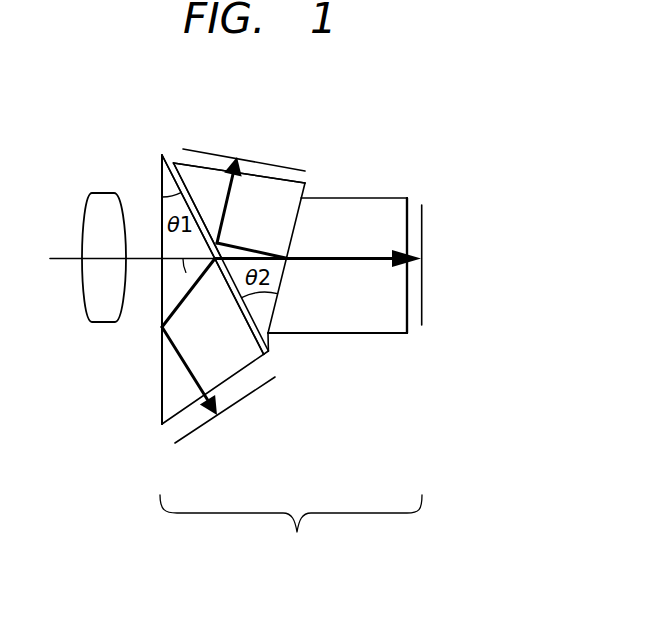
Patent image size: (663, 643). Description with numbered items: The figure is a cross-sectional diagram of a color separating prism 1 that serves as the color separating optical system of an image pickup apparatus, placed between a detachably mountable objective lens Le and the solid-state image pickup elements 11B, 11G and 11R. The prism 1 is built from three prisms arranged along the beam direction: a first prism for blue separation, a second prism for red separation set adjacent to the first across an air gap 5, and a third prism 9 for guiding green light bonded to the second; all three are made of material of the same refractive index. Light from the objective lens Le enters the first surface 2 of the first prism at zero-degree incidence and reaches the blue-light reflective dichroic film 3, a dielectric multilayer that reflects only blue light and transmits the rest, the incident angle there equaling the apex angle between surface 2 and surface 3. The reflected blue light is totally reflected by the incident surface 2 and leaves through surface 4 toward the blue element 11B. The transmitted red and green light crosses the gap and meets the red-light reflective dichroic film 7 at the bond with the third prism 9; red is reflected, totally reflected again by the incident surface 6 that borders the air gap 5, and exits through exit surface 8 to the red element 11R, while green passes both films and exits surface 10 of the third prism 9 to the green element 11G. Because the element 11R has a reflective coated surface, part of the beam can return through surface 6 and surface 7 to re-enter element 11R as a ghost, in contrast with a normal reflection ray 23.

The color separating prism 1 is at (291, 528).
The surface 2 is at (160, 367).
The blue-light reflective dichroic film 3 is at (245, 312).
The surface 4 is at (178, 418).
The air gap 5 is at (268, 354).
The incident surface 6 is at (203, 207).
The red-light reflective dichroic film 7 is at (288, 248).
The exit surface 8 is at (202, 165).
The third prism 9 is at (299, 222).
The surface 10 is at (408, 327).
The solid-state image pickup element 11R is at (192, 148).
The solid-state image pickup element 11G is at (423, 222).
The solid-state image pickup element 11B is at (253, 392).
The normal reflection ray 23 is at (186, 375).
The objective lens Le is at (100, 192).